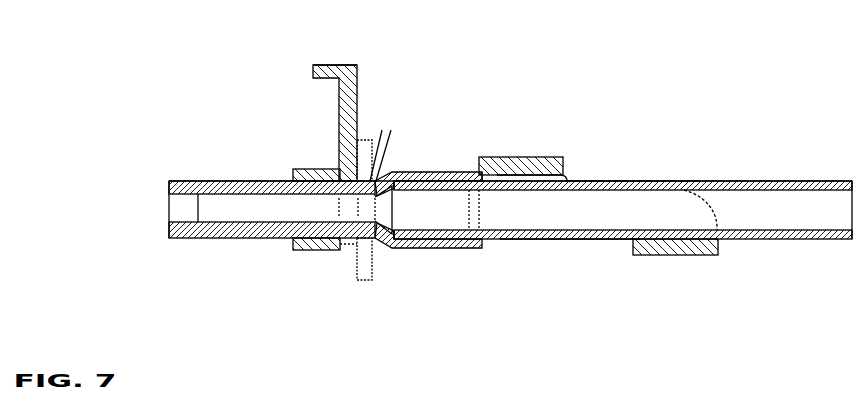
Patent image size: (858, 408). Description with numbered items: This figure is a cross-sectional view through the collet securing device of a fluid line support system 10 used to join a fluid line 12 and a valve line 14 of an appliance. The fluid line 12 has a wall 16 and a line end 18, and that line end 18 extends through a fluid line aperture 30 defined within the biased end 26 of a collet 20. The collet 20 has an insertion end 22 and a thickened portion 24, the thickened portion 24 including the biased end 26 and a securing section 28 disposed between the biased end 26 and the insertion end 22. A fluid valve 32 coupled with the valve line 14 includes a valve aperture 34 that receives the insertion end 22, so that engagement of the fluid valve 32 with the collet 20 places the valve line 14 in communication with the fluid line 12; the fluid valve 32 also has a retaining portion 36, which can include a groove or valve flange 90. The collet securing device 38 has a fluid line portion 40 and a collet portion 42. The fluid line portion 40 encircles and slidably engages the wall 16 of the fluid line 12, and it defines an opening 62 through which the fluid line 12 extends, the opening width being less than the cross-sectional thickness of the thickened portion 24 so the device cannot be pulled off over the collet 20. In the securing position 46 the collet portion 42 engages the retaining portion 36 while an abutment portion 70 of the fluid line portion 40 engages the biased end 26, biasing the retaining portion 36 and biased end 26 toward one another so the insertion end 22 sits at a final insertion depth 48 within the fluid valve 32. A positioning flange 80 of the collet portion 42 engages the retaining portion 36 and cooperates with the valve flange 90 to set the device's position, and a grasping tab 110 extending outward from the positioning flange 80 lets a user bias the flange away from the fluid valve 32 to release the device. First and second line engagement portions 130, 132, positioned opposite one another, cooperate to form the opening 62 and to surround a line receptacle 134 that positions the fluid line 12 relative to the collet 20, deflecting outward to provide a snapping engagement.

The fluid line support system 10 is at (535, 92).
The fluid line 12 is at (780, 177).
The valve line 14 is at (228, 177).
The wall 16 is at (801, 240).
The line end 18 is at (400, 205).
The collet 20 is at (444, 256).
The insertion end 22 is at (166, 224).
The thickened portion 24 is at (409, 170).
The biased end 26 is at (485, 249).
The securing section 28 is at (385, 246).
The fluid line aperture 30 is at (505, 158).
The fluid valve 32 is at (297, 258).
The valve aperture 34 is at (391, 130).
The retaining portion 36 is at (354, 289).
The collet securing device 38 is at (620, 132).
The fluid line portion 40 is at (603, 263).
The collet portion 42 is at (306, 150).
The securing position 46 is at (595, 138).
The final insertion depth 48 is at (196, 203).
The opening 62 is at (603, 175).
The abutment portion 70 is at (478, 172).
The positioning flange 80 is at (339, 110).
The valve flange 90 is at (358, 262).
The grasping tab 110 is at (340, 66).
The first line engagement portion 130 is at (683, 256).
The second line engagement portion 132 is at (545, 157).
The line receptacle 134 is at (555, 243).